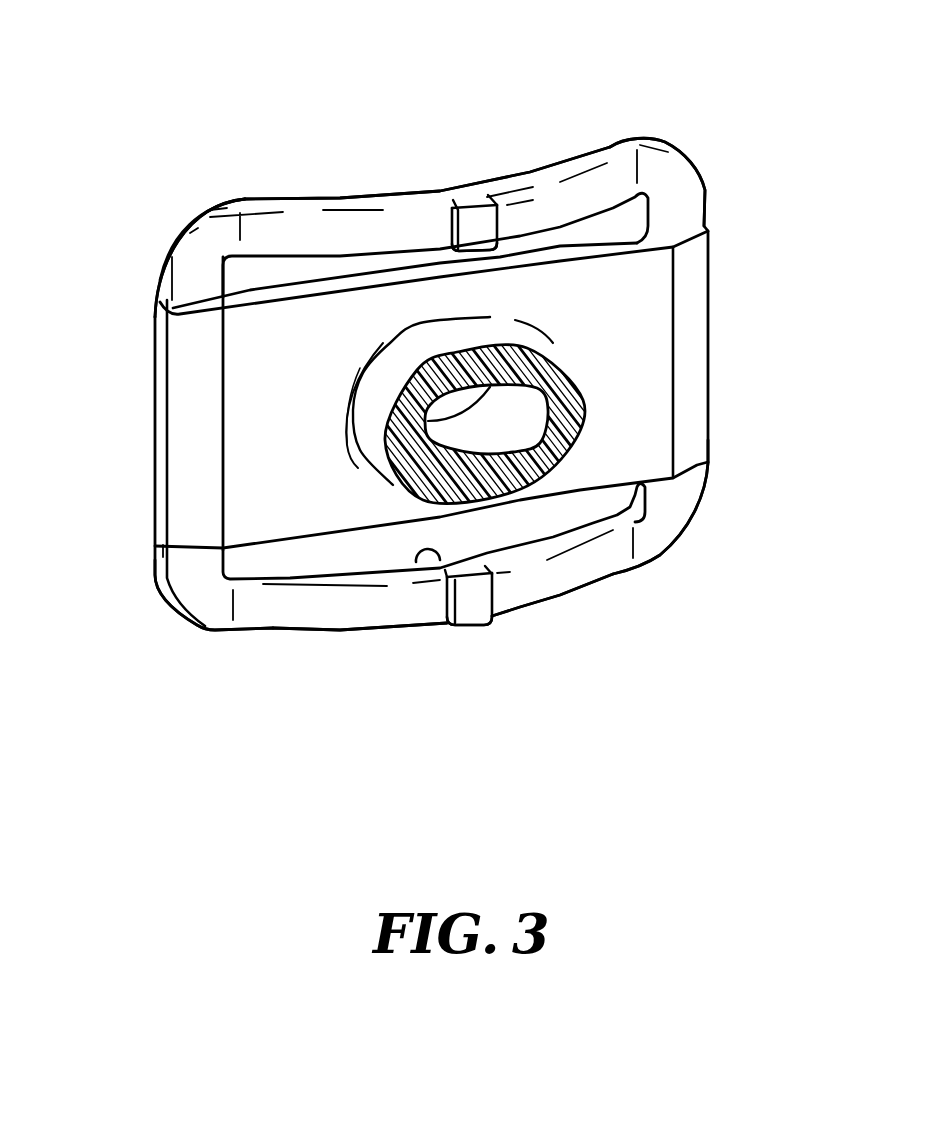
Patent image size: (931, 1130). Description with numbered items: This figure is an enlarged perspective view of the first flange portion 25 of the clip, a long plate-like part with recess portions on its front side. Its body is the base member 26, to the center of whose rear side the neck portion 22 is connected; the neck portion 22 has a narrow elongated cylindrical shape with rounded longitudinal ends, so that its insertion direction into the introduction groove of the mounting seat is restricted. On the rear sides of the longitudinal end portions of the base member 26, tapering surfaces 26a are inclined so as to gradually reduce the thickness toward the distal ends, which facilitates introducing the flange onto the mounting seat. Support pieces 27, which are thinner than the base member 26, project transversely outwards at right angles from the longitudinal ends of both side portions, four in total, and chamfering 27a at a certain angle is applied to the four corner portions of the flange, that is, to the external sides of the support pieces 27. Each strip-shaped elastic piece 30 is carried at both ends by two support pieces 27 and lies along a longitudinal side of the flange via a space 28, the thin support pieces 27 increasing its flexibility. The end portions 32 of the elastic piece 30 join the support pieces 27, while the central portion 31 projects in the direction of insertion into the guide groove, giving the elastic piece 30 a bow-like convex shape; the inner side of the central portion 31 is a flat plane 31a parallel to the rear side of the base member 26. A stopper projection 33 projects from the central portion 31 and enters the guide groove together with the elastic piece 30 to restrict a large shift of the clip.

The neck portion 22 is at (567, 388).
The first flange portion 25 is at (367, 173).
The base member 26 is at (240, 402).
The tapering surfaces 26a is at (187, 457).
The support pieces 27 is at (190, 249).
The chamfering 27a is at (200, 253).
The spaces 28 is at (613, 210).
The elastic piece 30 is at (521, 158).
The central portion 31 is at (490, 199).
The flat plane 31a is at (452, 203).
The end portions 32 is at (303, 220).
The stopper projection 33 is at (452, 222).